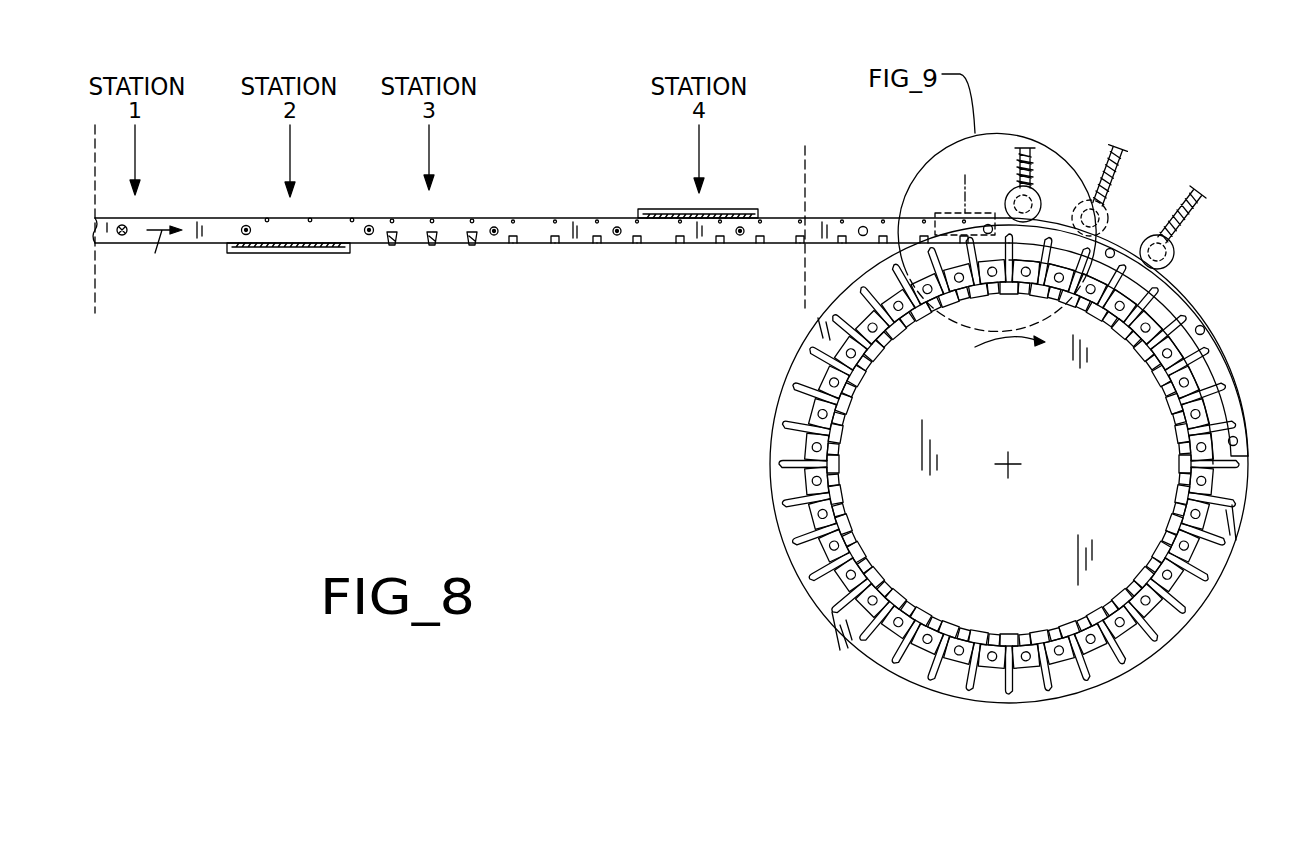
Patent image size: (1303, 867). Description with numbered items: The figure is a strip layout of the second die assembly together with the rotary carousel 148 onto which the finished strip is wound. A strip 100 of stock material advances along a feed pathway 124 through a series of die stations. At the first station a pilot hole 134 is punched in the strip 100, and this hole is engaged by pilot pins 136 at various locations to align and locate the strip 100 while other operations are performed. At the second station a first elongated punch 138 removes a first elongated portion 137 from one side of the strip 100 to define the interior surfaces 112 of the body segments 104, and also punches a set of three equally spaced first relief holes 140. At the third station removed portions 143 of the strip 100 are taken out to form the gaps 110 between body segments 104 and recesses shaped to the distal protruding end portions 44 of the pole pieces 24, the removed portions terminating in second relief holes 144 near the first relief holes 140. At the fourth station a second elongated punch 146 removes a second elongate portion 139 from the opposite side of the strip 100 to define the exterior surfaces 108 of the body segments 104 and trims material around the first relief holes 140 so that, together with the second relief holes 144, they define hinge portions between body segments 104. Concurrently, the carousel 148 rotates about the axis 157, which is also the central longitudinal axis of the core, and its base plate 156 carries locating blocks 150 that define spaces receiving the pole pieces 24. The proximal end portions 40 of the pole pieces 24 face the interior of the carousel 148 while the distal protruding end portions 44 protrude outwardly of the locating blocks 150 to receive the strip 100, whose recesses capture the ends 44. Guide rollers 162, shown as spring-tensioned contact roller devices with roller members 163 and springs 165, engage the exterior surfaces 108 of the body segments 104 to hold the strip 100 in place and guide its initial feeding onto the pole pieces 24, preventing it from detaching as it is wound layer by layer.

The pole piece 24 is at (1107, 273).
The proximal end portion 40 is at (1160, 377).
The distal protruding end portion 44 is at (1230, 498).
The strip 100 is at (199, 238).
The body segment 104 is at (1177, 297).
The exterior surface 108 is at (825, 217).
The gap 110 is at (559, 252).
The interior surface 112 is at (533, 244).
The feed pathway 124 is at (155, 253).
The pilot hole 134 is at (127, 226).
The pilot pin 136 is at (243, 226).
The first elongated portion 137 is at (310, 247).
The first elongated punch 138 is at (247, 253).
The second elongate portion 139 is at (660, 209).
The first relief hole 140 is at (267, 217).
The removed portion 143 is at (392, 247).
The second relief hole 144 is at (392, 228).
The second elongated punch 146 is at (733, 209).
The rotary carousel 148 is at (988, 436).
The locating block 150 is at (843, 415).
The base plate 156 is at (780, 522).
The axis 157 is at (1012, 460).
The guide roller 162 is at (1023, 150).
The roller member 163 is at (1005, 193).
The spring 165 is at (1035, 162).